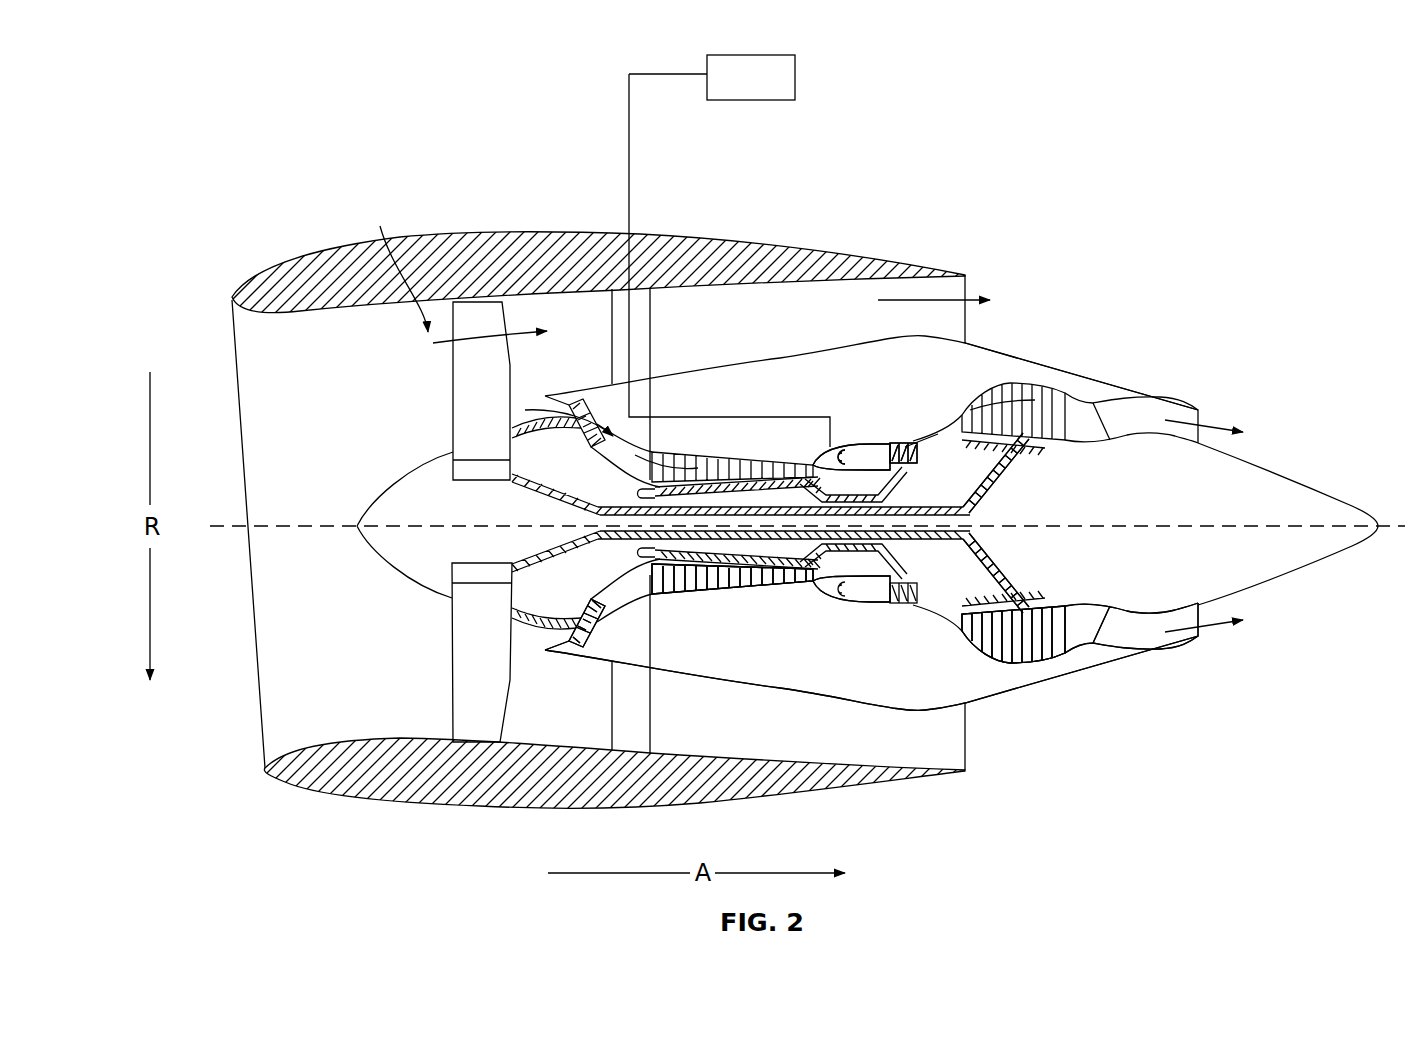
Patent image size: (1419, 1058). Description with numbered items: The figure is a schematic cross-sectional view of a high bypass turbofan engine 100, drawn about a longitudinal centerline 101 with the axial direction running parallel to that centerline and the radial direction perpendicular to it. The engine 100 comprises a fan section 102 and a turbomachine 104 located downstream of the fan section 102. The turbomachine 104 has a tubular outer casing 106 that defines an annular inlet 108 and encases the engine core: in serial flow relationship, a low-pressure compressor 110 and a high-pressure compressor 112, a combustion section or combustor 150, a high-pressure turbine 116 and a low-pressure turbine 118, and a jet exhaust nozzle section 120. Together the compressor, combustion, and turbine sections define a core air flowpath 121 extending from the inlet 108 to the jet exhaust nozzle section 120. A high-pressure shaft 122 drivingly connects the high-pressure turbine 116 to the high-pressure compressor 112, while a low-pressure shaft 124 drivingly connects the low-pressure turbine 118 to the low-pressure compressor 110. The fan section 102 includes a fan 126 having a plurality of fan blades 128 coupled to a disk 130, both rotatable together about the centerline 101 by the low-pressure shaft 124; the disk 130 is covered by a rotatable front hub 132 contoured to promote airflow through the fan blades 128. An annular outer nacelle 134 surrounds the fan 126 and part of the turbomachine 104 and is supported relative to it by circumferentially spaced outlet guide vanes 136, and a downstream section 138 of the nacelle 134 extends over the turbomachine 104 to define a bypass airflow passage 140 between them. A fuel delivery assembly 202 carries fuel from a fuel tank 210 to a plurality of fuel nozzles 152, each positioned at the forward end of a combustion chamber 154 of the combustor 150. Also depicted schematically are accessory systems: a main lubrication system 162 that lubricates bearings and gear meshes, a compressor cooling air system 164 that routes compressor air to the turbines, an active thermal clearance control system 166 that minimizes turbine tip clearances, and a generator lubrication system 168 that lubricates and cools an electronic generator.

The turbofan engine 100 is at (1087, 203).
The longitudinal centerline 101 is at (1194, 520).
The fan section 102 is at (391, 264).
The turbomachine 104 is at (765, 297).
The tubular outer casing 106 is at (815, 694).
The inlet 108 is at (548, 633).
The low-pressure compressor 110 is at (596, 633).
The high-pressure compressor 112 is at (700, 601).
The high-pressure turbine 116 is at (928, 600).
The low-pressure turbine 118 is at (1047, 662).
The jet exhaust nozzle section 120 is at (1113, 627).
The core air flowpath 121 is at (632, 592).
The high-pressure shaft 122 is at (913, 474).
The low-pressure shaft 124 is at (1013, 467).
The fan 126 is at (428, 370).
The fan blades 128 is at (447, 623).
The disk 130 is at (477, 477).
The rotatable front hub 132 is at (397, 571).
The outer nacelle 134 is at (545, 814).
The outlet guide vanes 136 is at (650, 323).
The downstream section of the nacelle 138 is at (872, 253).
The bypass airflow passage 140 is at (818, 318).
The combustion section 150 is at (557, 103).
The fuel nozzles 152 is at (835, 458).
The combustion chamber 154 is at (846, 456).
The main lubrication system 162 is at (924, 382).
The compressor cooling air system 164 is at (715, 660).
The active thermal clearance control system 166 is at (853, 640).
The generator lubrication system 168 is at (839, 684).
The fuel delivery assembly 202 is at (631, 156).
The fuel tank 210 is at (768, 55).